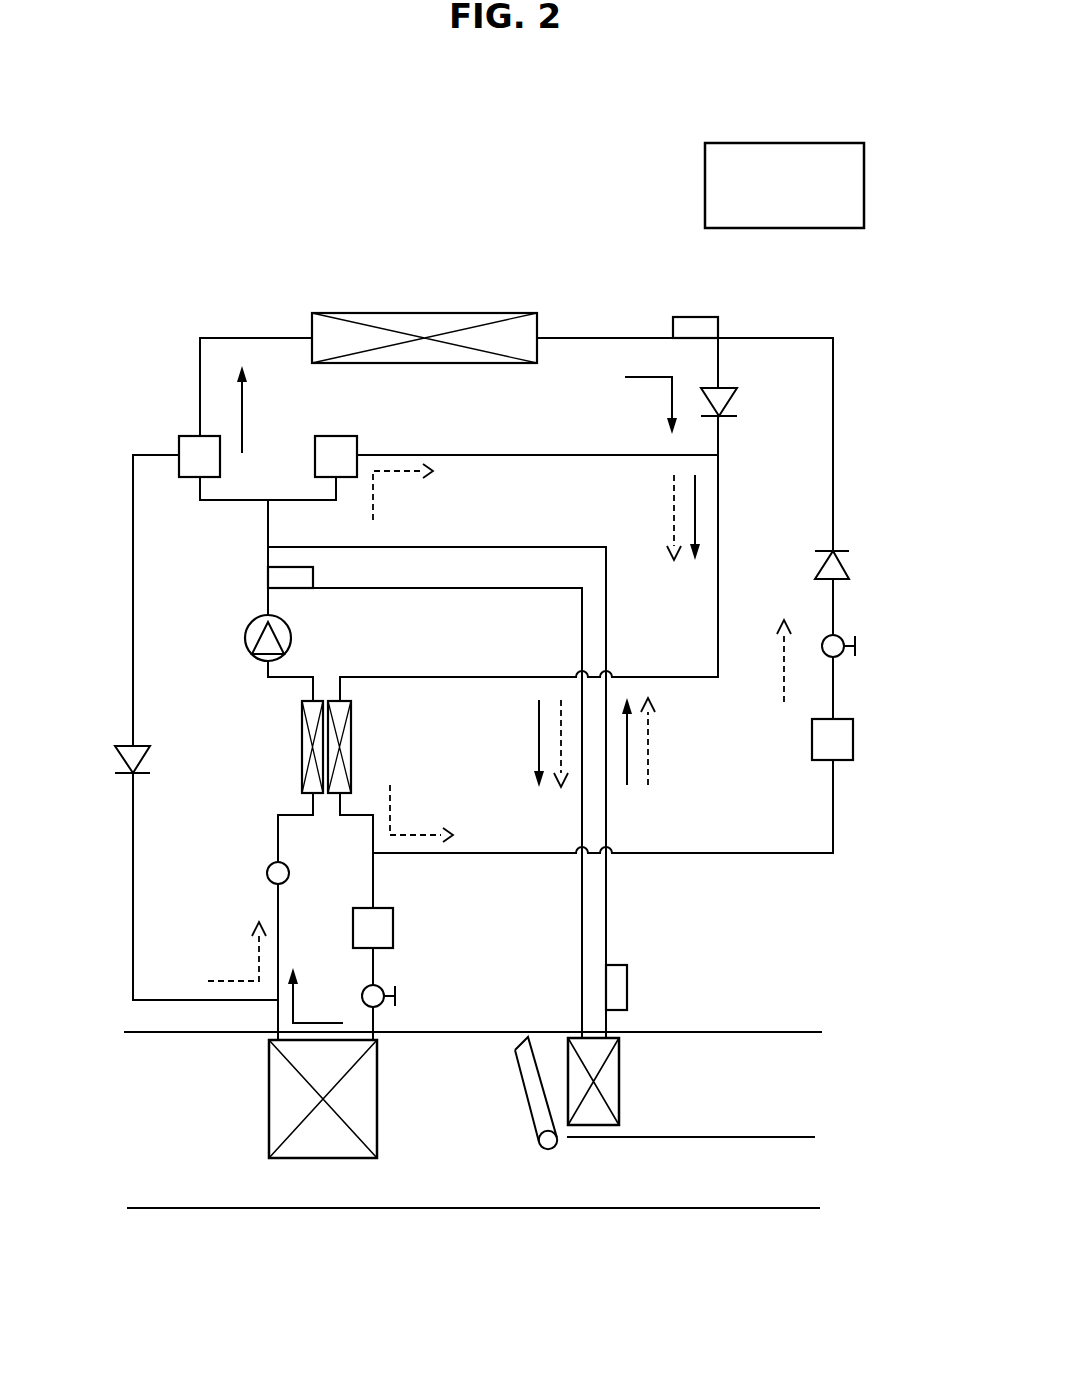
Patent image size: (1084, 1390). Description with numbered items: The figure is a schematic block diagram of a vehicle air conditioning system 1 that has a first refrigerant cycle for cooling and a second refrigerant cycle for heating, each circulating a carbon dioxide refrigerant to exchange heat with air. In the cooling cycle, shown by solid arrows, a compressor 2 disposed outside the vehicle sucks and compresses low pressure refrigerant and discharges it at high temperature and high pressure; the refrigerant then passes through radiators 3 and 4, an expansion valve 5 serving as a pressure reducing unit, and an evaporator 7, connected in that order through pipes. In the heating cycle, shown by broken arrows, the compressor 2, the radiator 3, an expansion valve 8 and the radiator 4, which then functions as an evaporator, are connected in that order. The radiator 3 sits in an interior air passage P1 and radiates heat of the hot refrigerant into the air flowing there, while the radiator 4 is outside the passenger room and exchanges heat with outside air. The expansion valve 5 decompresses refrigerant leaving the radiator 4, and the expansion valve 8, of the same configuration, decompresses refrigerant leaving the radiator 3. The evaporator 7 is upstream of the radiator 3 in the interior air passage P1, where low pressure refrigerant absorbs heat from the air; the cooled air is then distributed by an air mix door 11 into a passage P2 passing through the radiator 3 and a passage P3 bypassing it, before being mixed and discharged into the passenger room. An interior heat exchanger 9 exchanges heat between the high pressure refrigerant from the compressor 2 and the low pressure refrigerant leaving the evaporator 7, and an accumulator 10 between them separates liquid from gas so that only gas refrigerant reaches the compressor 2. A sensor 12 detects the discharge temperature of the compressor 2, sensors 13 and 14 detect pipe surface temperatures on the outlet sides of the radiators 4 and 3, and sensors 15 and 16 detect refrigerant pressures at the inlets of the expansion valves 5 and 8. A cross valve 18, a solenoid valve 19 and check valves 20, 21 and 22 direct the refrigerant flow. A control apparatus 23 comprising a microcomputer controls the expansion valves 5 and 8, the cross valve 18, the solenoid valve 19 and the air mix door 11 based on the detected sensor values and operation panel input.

The air conditioning system 1 is at (128, 286).
The compressor 2 is at (250, 637).
The radiator 3 is at (613, 1095).
The radiator 4 is at (425, 312).
The expansion valve 5 is at (382, 990).
The evaporator 7 is at (272, 1088).
The expansion valve 8 is at (834, 645).
The interior heat exchanger 9 is at (305, 748).
The accumulator 10 is at (273, 878).
The air mix door 11 is at (537, 1100).
The sensor 12 is at (275, 577).
The sensor 13 is at (690, 318).
The sensor 14 is at (620, 980).
The sensor 15 is at (388, 935).
The sensor 16 is at (847, 742).
The cross valve 18 is at (190, 440).
The solenoid valve 19 is at (335, 440).
The check valve 20 is at (727, 397).
The check valve 21 is at (842, 572).
The check valve 22 is at (123, 747).
The control apparatus 23 is at (705, 178).
The interior air passage P1 is at (197, 1200).
The passage P2 is at (755, 1040).
The passage P3 is at (728, 1200).